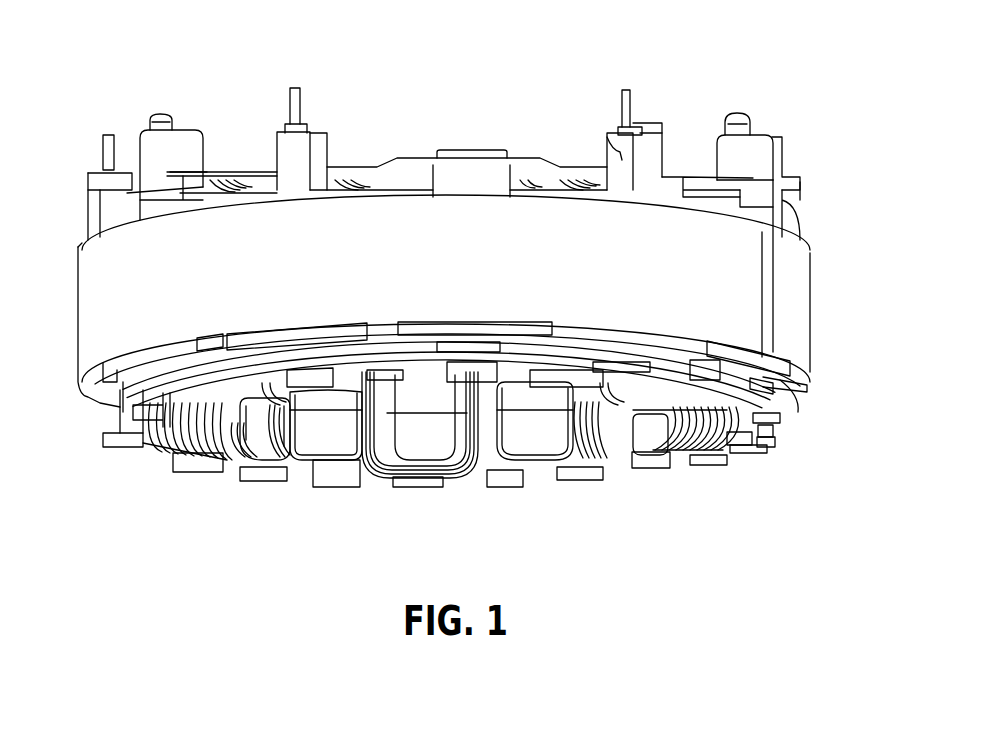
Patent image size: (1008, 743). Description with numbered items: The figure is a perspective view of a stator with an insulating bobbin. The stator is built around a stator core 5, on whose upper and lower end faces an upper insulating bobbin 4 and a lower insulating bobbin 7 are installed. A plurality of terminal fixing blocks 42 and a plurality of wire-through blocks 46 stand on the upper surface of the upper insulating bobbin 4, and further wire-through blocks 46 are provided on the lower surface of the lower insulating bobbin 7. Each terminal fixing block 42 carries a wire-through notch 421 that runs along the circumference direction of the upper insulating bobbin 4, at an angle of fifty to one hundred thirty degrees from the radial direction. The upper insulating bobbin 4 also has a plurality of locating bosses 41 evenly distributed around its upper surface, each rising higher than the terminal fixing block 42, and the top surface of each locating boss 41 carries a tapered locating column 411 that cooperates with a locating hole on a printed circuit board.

The upper insulating bobbin 4 is at (673, 198).
The locating boss 41 is at (201, 125).
The locating column 411 is at (152, 125).
The terminal fixing block 42 is at (305, 160).
The wire-through notch 421 is at (617, 150).
The wire-through block 46 is at (465, 173).
The stator core 5 is at (188, 262).
The lower insulating bobbin 7 is at (677, 342).